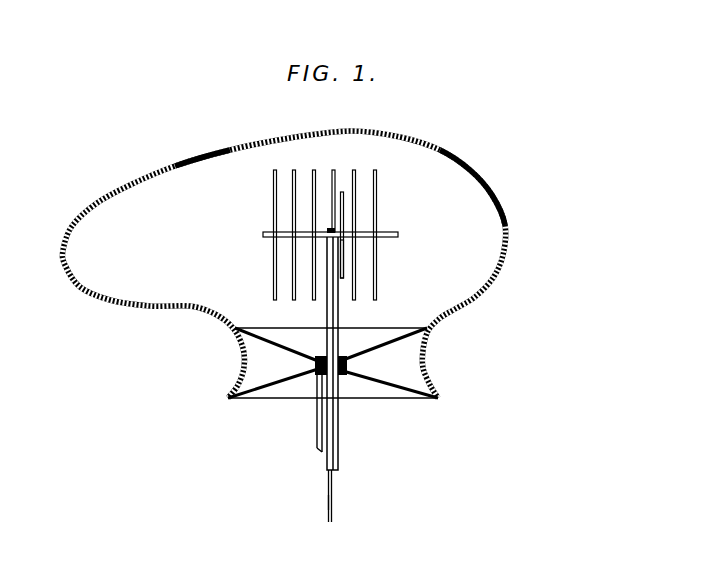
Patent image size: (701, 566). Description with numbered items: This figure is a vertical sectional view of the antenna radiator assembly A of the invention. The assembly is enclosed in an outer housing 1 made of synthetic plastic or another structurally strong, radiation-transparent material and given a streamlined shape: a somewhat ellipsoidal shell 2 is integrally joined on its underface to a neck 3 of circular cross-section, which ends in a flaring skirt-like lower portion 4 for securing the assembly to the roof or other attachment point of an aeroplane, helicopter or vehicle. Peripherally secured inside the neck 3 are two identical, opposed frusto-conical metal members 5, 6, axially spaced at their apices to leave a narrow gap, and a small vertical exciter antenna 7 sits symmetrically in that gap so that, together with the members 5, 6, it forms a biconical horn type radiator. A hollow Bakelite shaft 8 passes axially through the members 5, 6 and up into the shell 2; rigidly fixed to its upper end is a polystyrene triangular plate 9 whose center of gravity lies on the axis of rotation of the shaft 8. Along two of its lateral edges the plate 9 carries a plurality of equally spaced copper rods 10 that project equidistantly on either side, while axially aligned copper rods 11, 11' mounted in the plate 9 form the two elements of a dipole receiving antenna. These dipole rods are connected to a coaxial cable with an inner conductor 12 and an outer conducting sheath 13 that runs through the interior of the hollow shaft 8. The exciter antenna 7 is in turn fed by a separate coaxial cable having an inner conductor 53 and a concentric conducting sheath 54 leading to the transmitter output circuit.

The antenna radiator assembly A is at (197, 187).
The outer housing 1 is at (497, 240).
The ellipsoidal shell 2 is at (475, 203).
The neck 3 is at (241, 362).
The flaring skirt-like lower portion 4 is at (228, 398).
The frusto-conical metal member 5 is at (435, 330).
The frusto-conical metal member 6 is at (420, 391).
The exciter antenna 7 is at (314, 367).
The hollow Bakelite shaft 8 is at (334, 455).
The triangular plate 9 is at (399, 235).
The copper rods 10 is at (375, 172).
The copper rod 11 is at (371, 234).
The copper rod 11' is at (376, 259).
The inner conductor 12 is at (327, 507).
The outer conducting sheath 13 is at (333, 507).
The inner conductor 53 is at (318, 447).
The concentric conducting sheath 54 is at (316, 412).